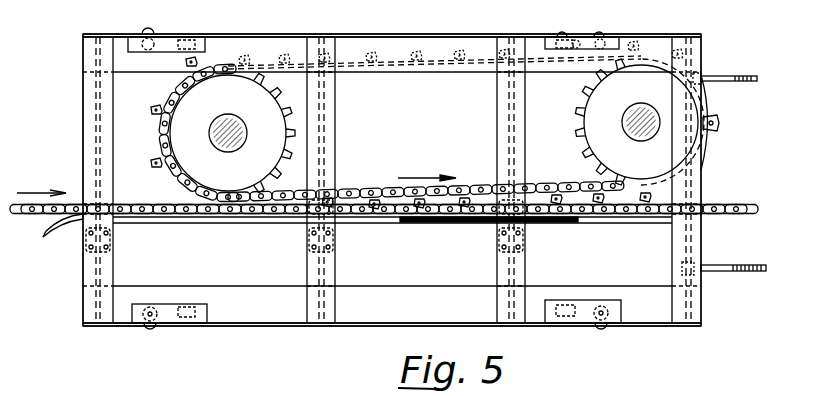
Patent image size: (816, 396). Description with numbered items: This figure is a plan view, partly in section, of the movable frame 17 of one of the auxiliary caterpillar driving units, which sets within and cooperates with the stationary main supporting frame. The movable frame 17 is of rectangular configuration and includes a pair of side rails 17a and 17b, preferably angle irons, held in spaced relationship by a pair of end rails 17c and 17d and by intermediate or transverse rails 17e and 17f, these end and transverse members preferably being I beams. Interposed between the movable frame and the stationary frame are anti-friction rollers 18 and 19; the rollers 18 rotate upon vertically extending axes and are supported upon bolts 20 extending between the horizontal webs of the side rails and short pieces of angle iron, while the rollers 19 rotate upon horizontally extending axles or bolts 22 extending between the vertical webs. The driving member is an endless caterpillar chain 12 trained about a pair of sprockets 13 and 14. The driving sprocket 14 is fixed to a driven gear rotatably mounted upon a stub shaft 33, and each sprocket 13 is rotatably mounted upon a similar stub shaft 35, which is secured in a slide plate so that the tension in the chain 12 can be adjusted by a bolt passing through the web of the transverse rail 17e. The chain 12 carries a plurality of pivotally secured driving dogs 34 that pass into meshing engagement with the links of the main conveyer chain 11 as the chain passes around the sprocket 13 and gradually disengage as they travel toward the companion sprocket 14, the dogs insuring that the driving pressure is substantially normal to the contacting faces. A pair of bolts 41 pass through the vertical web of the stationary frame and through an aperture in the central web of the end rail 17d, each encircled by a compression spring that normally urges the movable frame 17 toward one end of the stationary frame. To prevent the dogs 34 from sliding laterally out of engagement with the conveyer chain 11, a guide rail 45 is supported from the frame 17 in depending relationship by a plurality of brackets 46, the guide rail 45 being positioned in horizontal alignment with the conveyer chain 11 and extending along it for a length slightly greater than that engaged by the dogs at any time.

The endless conveyer chain 11 is at (736, 199).
The endless chain 12 is at (377, 160).
The sprocket 13 is at (182, 130).
The driving sprocket 14 is at (601, 142).
The movable frame 17 is at (117, 264).
The side rail 17a is at (259, 328).
The side rail 17b is at (454, 33).
The end rail 17c is at (83, 112).
The end rail 17d is at (701, 238).
The transverse rail 17e is at (332, 115).
The transverse rail 17f is at (495, 97).
The anti-friction roller 18 is at (583, 40).
The anti-friction roller 19 is at (575, 40).
The bolt 20 is at (611, 34).
The axle or bolt 22 is at (559, 35).
The stub shaft 33 is at (626, 132).
The driving dog 34 is at (153, 163).
The stub shaft 35 is at (222, 152).
The bolt 41 is at (727, 82).
The guide rail 45 is at (283, 226).
The bracket 46 is at (337, 239).